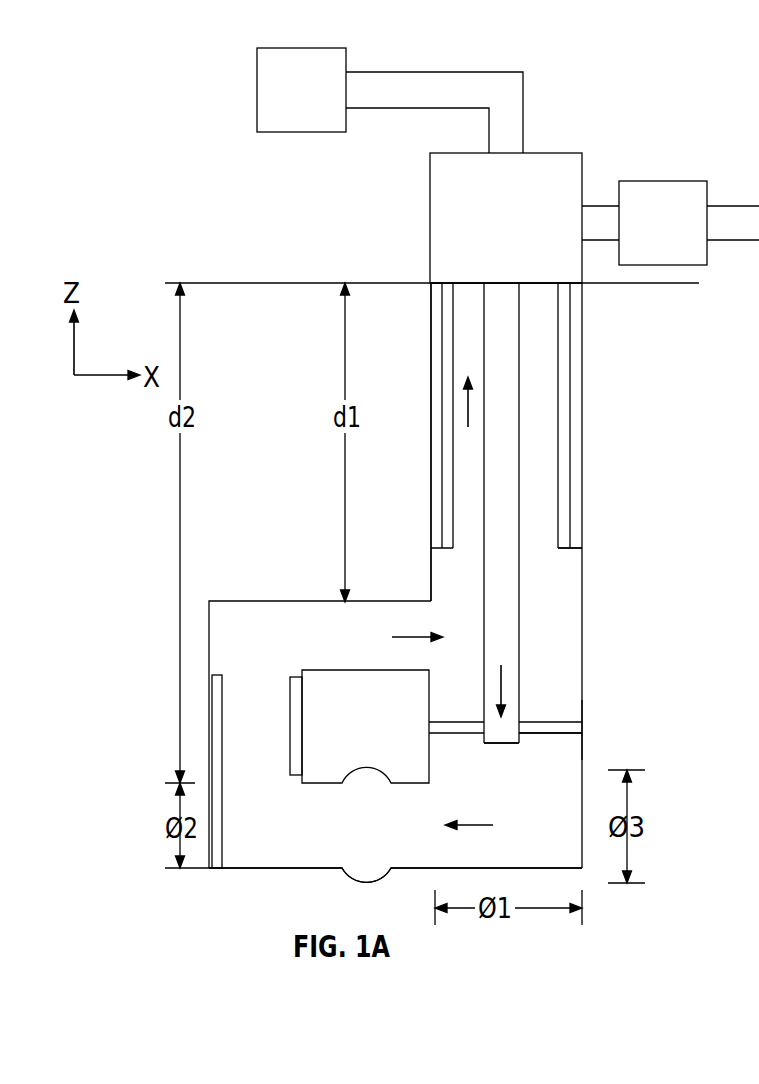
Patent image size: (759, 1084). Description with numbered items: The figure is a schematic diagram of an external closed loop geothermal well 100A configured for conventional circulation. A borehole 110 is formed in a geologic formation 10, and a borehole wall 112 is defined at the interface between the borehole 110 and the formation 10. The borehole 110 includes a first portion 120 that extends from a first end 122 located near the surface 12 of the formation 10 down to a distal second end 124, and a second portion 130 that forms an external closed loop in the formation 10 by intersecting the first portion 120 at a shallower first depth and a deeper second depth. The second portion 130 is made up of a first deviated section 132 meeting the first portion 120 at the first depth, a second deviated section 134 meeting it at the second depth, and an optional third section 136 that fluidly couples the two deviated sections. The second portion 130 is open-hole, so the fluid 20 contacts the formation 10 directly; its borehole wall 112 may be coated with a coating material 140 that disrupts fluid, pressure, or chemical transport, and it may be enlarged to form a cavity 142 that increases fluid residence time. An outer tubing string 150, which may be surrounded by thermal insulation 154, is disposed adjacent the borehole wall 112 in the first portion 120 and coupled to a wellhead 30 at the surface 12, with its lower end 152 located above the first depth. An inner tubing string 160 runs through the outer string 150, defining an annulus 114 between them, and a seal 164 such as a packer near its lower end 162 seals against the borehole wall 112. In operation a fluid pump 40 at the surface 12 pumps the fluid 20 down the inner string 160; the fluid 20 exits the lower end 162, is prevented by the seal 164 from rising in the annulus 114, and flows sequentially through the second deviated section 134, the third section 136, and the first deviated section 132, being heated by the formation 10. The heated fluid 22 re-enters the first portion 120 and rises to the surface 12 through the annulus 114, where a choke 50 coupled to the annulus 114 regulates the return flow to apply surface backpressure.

The external closed loop geothermal well 100A is at (161, 147).
The geologic formation 10 is at (272, 482).
The surface 12 is at (240, 283).
The fluid 20 is at (503, 692).
The heated fluid 22 is at (458, 407).
The wellhead 30 is at (520, 235).
The fluid pump 40 is at (317, 102).
The choke 50 is at (677, 235).
The borehole 110 is at (610, 735).
The borehole wall 112 is at (583, 710).
The annulus 114 is at (583, 673).
The first portion 120 is at (452, 577).
The first end 122 is at (503, 283).
The second end 124 is at (500, 868).
The second portion 130 is at (277, 872).
The first deviated section 132 is at (343, 645).
The second deviated section 134 is at (384, 845).
The third section 136 is at (278, 755).
The coating material 140 is at (215, 675).
The cavity 142 is at (366, 768).
The outer tubing string 150 is at (566, 467).
The lower end 152 is at (565, 550).
The thermal insulation 154 is at (578, 407).
The inner tubing string 160 is at (506, 512).
The lower end 162 is at (502, 745).
The seal 164 is at (568, 735).